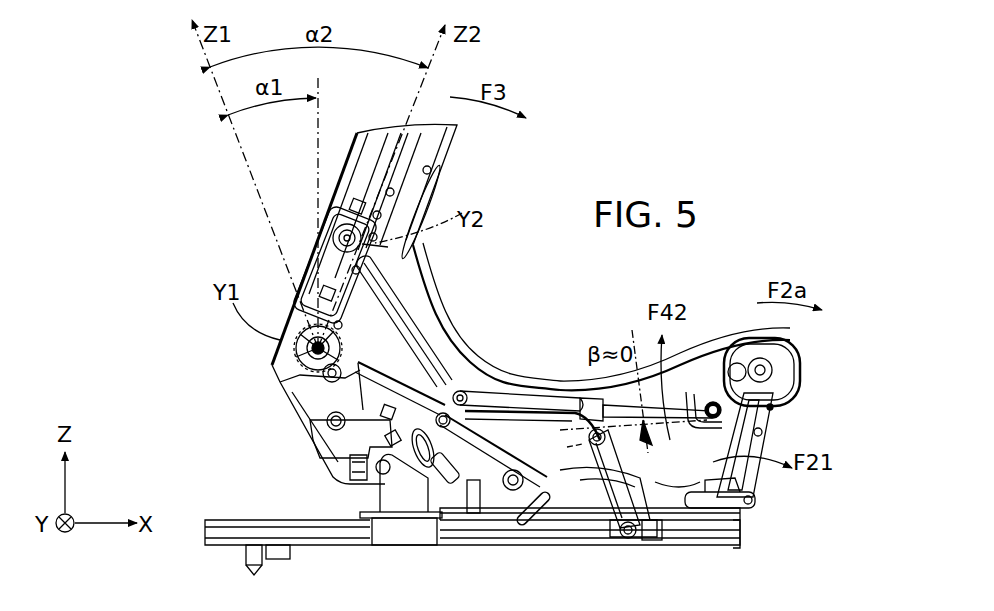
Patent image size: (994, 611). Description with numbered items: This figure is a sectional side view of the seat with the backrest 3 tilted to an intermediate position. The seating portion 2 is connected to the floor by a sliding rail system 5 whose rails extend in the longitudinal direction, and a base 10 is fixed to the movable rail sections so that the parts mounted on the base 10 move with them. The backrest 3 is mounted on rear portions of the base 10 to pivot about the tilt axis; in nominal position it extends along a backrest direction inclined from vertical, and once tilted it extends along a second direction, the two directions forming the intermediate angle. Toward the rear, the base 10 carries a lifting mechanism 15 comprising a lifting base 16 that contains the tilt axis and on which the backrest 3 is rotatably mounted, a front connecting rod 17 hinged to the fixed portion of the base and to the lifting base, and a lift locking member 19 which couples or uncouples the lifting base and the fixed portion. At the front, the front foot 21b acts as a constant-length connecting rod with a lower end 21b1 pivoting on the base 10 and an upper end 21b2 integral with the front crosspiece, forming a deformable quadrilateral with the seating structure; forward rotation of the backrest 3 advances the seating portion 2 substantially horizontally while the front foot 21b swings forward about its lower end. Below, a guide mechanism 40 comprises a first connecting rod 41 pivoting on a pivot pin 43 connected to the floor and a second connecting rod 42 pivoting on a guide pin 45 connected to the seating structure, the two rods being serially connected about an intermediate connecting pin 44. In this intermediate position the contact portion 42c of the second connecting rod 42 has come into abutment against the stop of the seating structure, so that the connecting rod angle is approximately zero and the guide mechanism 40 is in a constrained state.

The seating portion 2 is at (527, 378).
The backrest 3 is at (305, 246).
The sliding rail system 5 is at (248, 507).
The base 10 is at (722, 512).
The lifting mechanism 15 is at (283, 399).
The lifting base 16 is at (337, 452).
The front connecting rod 17 is at (505, 412).
The lift locking member 19 is at (403, 497).
The front foot 21b is at (772, 436).
The end of front foot 21b1 is at (722, 503).
The upper end of front foot 21b2 is at (770, 372).
The guide mechanism 40 is at (630, 476).
The first connecting rod 41 is at (607, 495).
The second connecting rod 42 is at (598, 402).
The contact portion 42c is at (684, 400).
The pivot pin 43 is at (632, 537).
The connecting pin 44 is at (598, 447).
The guide pin 45 is at (714, 402).